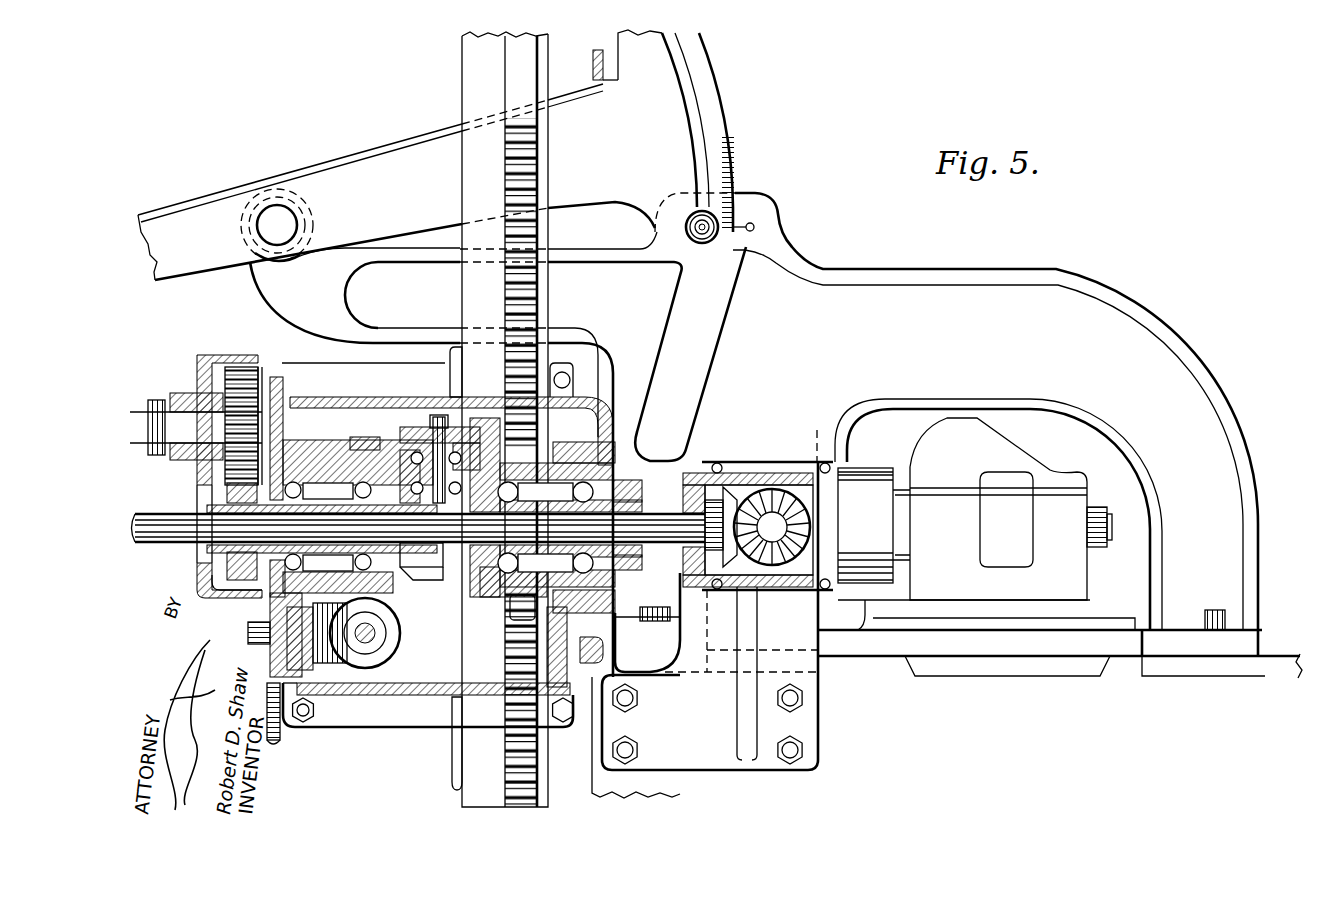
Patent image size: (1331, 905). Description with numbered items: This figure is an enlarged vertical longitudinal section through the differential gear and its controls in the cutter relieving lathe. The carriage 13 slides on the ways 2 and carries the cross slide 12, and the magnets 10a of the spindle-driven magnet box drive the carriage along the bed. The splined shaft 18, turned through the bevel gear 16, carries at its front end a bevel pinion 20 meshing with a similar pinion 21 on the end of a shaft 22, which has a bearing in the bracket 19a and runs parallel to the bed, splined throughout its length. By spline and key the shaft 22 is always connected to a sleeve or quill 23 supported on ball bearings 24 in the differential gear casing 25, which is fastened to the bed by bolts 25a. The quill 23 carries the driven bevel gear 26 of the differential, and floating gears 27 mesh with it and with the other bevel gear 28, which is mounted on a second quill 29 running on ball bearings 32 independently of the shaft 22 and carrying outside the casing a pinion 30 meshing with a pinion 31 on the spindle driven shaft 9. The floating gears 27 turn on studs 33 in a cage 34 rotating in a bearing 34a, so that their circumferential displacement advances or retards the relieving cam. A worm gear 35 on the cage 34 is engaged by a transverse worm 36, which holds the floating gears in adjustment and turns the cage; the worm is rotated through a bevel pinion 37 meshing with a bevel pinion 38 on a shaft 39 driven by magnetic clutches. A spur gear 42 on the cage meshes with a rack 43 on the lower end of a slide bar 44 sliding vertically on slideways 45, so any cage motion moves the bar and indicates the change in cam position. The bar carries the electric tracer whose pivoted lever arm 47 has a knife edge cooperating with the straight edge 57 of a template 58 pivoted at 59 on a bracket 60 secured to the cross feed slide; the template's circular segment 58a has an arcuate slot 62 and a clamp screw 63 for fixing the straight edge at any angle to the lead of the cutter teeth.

The ways 2 is at (283, 748).
The spindle driven shaft 9 is at (146, 410).
The magnets 10a is at (1112, 522).
The cross slide 12 is at (1037, 650).
The carriage 13 is at (946, 685).
The bevel gear 16 is at (814, 458).
The splined shaft 18 is at (797, 458).
The bracket 19a is at (710, 722).
The bevel pinion 20 is at (772, 512).
The bevel pinion 21 is at (735, 490).
The shaft 22 is at (188, 548).
The sleeve or quill 23 is at (688, 473).
The ball bearings 24 is at (618, 437).
The differential gear casing 25 is at (594, 396).
The bolts 25a is at (304, 723).
The bevel gear 26 is at (422, 558).
The floating gears 27 is at (377, 440).
The bevel gear 28 is at (421, 585).
The sleeve or quill 29 is at (205, 510).
The pinion 30 is at (256, 585).
The pinion 31 is at (258, 375).
The ball bearings 32 is at (295, 480).
The studs 33 is at (437, 430).
The cage 34 is at (447, 640).
The bearing 34a is at (566, 617).
The worm gear 35 is at (360, 437).
The worm 36 is at (379, 648).
The bevel pinion 37 is at (373, 670).
The bevel pinion 38 is at (333, 670).
The shaft 39 is at (262, 645).
The spur gear 42 is at (530, 458).
The rack 43 is at (535, 300).
The slide bar 44 is at (470, 72).
The slideways 45 is at (456, 347).
The lever arm 47 is at (592, 62).
The straight edge 57 is at (405, 118).
The template 58 is at (396, 182).
The circular segment 58a is at (758, 136).
The pivot 59 is at (275, 210).
The bracket 60 is at (822, 268).
The arcuate slot 62 is at (684, 88).
The clamp screw 63 is at (712, 217).